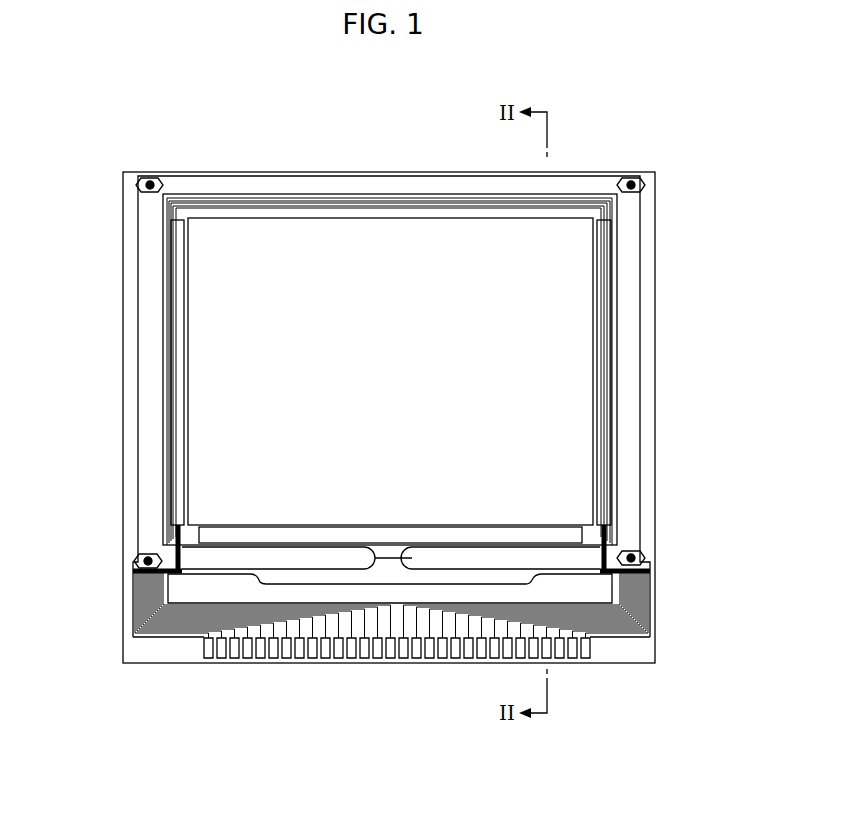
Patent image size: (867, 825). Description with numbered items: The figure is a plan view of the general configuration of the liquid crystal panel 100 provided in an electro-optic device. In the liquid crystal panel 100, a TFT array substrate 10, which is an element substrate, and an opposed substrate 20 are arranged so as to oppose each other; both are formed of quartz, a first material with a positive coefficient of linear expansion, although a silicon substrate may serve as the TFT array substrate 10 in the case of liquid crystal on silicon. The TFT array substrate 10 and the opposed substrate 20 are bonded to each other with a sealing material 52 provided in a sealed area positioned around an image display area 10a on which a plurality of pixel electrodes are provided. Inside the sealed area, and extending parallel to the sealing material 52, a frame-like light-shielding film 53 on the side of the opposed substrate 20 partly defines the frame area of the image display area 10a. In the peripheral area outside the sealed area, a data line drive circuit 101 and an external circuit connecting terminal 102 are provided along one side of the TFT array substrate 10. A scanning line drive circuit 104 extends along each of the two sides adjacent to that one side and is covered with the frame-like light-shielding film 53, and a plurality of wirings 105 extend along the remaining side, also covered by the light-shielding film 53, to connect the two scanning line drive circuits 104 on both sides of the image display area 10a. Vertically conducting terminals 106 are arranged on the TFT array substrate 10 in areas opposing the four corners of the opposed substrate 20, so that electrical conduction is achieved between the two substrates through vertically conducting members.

The liquid crystal panel 100 is at (607, 108).
The TFT array substrate 10 is at (232, 172).
The image display area 10a is at (228, 327).
The opposed substrate 20 is at (405, 194).
The sealing material 52 is at (634, 305).
The frame-like light-shielding film 53 is at (598, 528).
The data line drive circuit 101 is at (196, 597).
The external circuit connecting terminal 102 is at (358, 648).
The scanning line drive circuit 104 is at (609, 370).
The wirings 105 is at (324, 208).
The vertically conducting terminals 106 is at (152, 182).